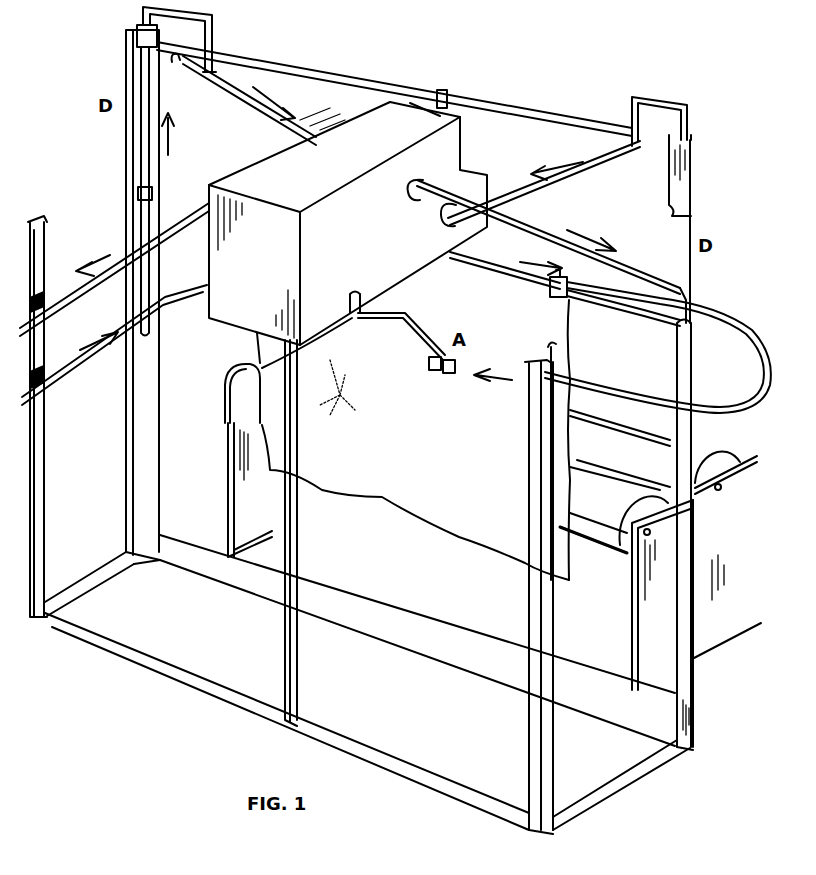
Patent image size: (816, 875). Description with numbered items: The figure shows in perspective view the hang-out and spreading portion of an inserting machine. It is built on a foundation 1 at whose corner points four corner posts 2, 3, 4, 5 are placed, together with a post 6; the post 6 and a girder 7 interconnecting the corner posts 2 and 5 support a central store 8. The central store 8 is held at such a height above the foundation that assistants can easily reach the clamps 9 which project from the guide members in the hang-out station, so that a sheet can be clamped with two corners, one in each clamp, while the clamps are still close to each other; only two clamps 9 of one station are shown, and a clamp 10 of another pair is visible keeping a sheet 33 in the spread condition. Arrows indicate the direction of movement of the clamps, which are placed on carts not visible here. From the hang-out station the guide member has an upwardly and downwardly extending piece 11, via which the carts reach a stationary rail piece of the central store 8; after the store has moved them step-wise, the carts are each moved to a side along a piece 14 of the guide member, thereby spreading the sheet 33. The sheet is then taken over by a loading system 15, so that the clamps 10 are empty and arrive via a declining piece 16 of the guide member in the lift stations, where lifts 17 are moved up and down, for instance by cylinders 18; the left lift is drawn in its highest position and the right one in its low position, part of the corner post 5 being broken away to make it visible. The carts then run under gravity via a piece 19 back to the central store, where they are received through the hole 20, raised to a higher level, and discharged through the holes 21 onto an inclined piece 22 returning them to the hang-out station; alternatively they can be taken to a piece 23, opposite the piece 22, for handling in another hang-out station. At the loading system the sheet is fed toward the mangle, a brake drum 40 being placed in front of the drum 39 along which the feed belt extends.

The foundation 1 is at (425, 657).
The corner post 2 is at (133, 433).
The corner post 3 is at (40, 521).
The corner post 4 is at (532, 743).
The corner post 5 is at (680, 700).
The post 6 is at (293, 665).
The girder 7 is at (500, 101).
The central store 8 is at (347, 128).
The clamp 9 is at (447, 370).
The clamp 10 is at (580, 302).
The upwardly and downwardly extending piece 11 is at (422, 331).
The piece of guide member 14 is at (480, 240).
The loading system 15 is at (716, 660).
The declining piece 16 is at (205, 178).
The lift 17 is at (175, 63).
The cylinder 18 is at (143, 213).
The piece of guide member 19 is at (268, 112).
The hole 20 is at (448, 223).
The hole 21 is at (410, 200).
The inclined piece 22 is at (739, 320).
The piece 23 is at (74, 305).
The sheet 33 is at (473, 530).
The drum 39 is at (710, 448).
The brake drum 40 is at (608, 533).